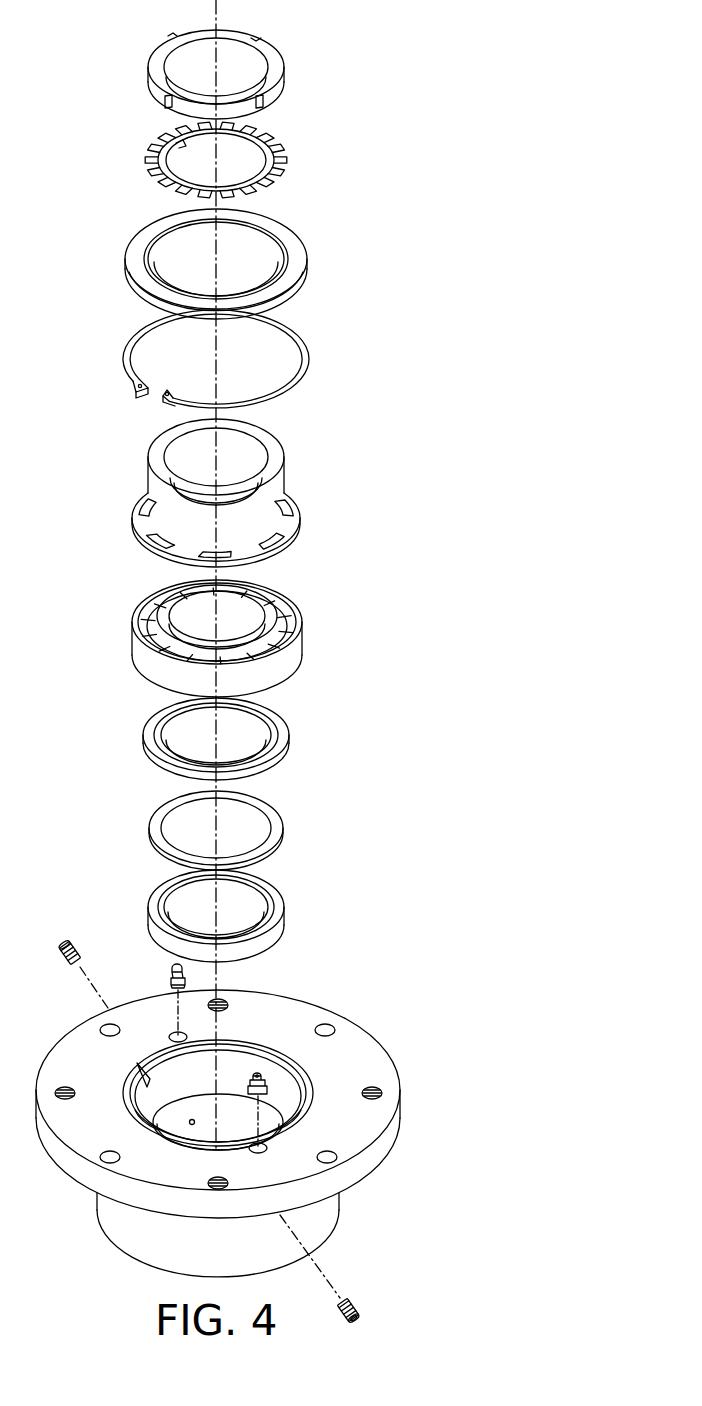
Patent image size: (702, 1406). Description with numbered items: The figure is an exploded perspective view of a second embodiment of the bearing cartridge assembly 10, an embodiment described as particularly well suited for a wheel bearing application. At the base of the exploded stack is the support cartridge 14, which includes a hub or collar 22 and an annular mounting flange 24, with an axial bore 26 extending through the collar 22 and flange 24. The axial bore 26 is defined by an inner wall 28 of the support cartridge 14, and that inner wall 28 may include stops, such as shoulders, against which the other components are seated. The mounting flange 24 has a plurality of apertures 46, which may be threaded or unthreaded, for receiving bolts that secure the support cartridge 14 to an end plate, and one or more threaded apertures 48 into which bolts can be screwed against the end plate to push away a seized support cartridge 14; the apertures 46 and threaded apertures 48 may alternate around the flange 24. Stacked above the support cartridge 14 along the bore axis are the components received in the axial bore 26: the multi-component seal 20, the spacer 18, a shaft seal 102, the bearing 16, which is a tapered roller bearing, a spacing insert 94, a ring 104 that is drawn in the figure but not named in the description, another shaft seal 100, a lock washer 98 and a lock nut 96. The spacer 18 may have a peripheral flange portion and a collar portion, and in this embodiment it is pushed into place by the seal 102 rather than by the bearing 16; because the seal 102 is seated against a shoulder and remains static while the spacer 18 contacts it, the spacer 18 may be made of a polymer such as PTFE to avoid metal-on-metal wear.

The bearing cartridge assembly 10 is at (508, 330).
The support cartridge 14 is at (383, 1032).
The bearing 16 is at (308, 610).
The spacer 18 is at (293, 810).
The multi-component seal 20 is at (293, 887).
The hub or collar 22 is at (325, 1222).
The annular mounting flange 24 is at (387, 1142).
The axial bore 26 is at (180, 1090).
The inner wall 28 is at (286, 1102).
The apertures 46 is at (110, 1152).
The threaded apertures 48 is at (216, 1178).
The spacing insert 94 is at (308, 462).
The lock nut 96 is at (288, 67).
The lock washer 98 is at (290, 133).
The shaft seal 100 is at (290, 220).
The shaft seal 102 is at (302, 720).
The snap ring 104 is at (307, 323).